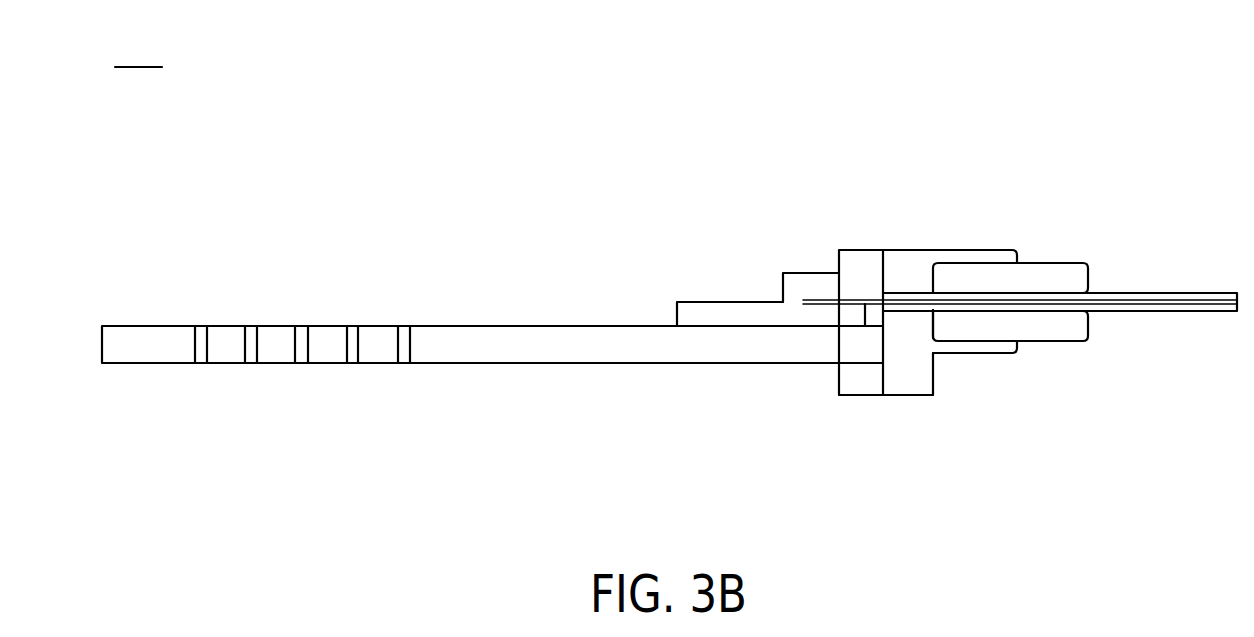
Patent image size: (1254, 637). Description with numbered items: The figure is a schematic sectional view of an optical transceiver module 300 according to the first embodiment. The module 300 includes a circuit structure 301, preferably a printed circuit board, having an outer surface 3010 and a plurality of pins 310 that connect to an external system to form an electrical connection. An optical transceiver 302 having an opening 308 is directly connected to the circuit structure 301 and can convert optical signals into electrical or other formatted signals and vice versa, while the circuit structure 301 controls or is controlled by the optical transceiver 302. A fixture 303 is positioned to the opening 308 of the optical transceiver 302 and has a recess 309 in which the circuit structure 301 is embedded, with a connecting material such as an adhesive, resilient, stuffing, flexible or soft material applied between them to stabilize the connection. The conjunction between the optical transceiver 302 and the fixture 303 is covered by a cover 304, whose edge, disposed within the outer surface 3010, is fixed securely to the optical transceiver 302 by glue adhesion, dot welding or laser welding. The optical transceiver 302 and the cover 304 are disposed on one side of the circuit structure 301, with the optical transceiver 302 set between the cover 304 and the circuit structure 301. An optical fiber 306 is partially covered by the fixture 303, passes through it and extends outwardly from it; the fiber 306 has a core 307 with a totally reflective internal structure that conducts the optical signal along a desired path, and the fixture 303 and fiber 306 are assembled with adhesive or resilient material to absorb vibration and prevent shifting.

The optical transceiver module 300 is at (138, 54).
The circuit structure 301 is at (152, 340).
The pins 310 is at (199, 338).
The outer surface 3010 is at (532, 325).
The optical transceiver 302 is at (727, 312).
The cover 304 is at (811, 282).
The opening 308 is at (860, 305).
The recess 309 is at (861, 367).
The fixture 303 is at (920, 380).
The optical fiber 306 is at (1048, 330).
The core 307 is at (1130, 315).